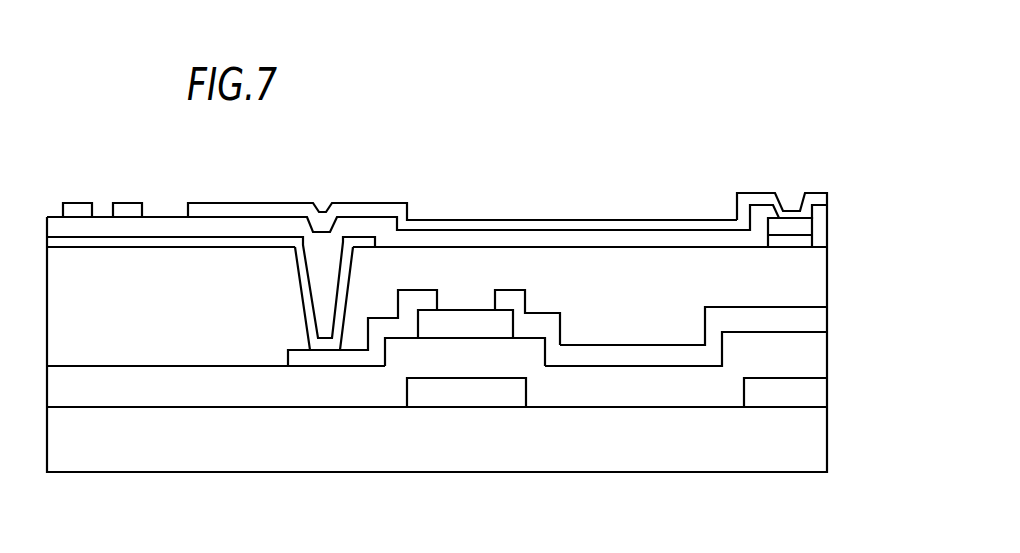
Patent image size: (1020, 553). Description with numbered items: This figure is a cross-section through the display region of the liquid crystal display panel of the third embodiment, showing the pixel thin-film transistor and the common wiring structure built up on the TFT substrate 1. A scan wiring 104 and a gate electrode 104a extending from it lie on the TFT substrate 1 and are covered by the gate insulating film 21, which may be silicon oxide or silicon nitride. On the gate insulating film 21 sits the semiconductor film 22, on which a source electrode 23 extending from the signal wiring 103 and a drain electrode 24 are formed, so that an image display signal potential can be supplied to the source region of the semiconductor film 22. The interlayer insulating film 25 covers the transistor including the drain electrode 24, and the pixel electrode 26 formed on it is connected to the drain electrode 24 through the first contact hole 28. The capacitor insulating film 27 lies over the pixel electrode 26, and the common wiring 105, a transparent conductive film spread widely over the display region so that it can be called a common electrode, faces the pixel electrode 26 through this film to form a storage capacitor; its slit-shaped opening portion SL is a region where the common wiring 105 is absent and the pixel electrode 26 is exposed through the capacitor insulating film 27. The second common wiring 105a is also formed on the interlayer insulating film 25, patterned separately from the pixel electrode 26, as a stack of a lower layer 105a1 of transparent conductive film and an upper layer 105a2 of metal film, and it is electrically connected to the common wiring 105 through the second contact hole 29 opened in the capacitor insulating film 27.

The TFT substrate 1 is at (152, 422).
The gate insulating film 21 is at (267, 385).
The semiconductor film 22 is at (443, 325).
The source electrode 23 is at (500, 298).
The drain electrode 24 is at (407, 298).
The interlayer insulating film 25 is at (397, 270).
The pixel electrode 26 is at (118, 245).
The capacitor insulating film 27 is at (225, 227).
The first contact hole 28 is at (305, 288).
The second contact hole 29 is at (785, 202).
The signal wiring 103 is at (620, 352).
The scan wiring 104 is at (782, 392).
The gate electrode 104a is at (513, 392).
The common wiring 105 is at (135, 208).
The second common wiring 105a is at (676, 182).
The lower layer 105a1 is at (783, 241).
The upper layer 105a2 is at (785, 225).
The opening portion SL is at (105, 208).